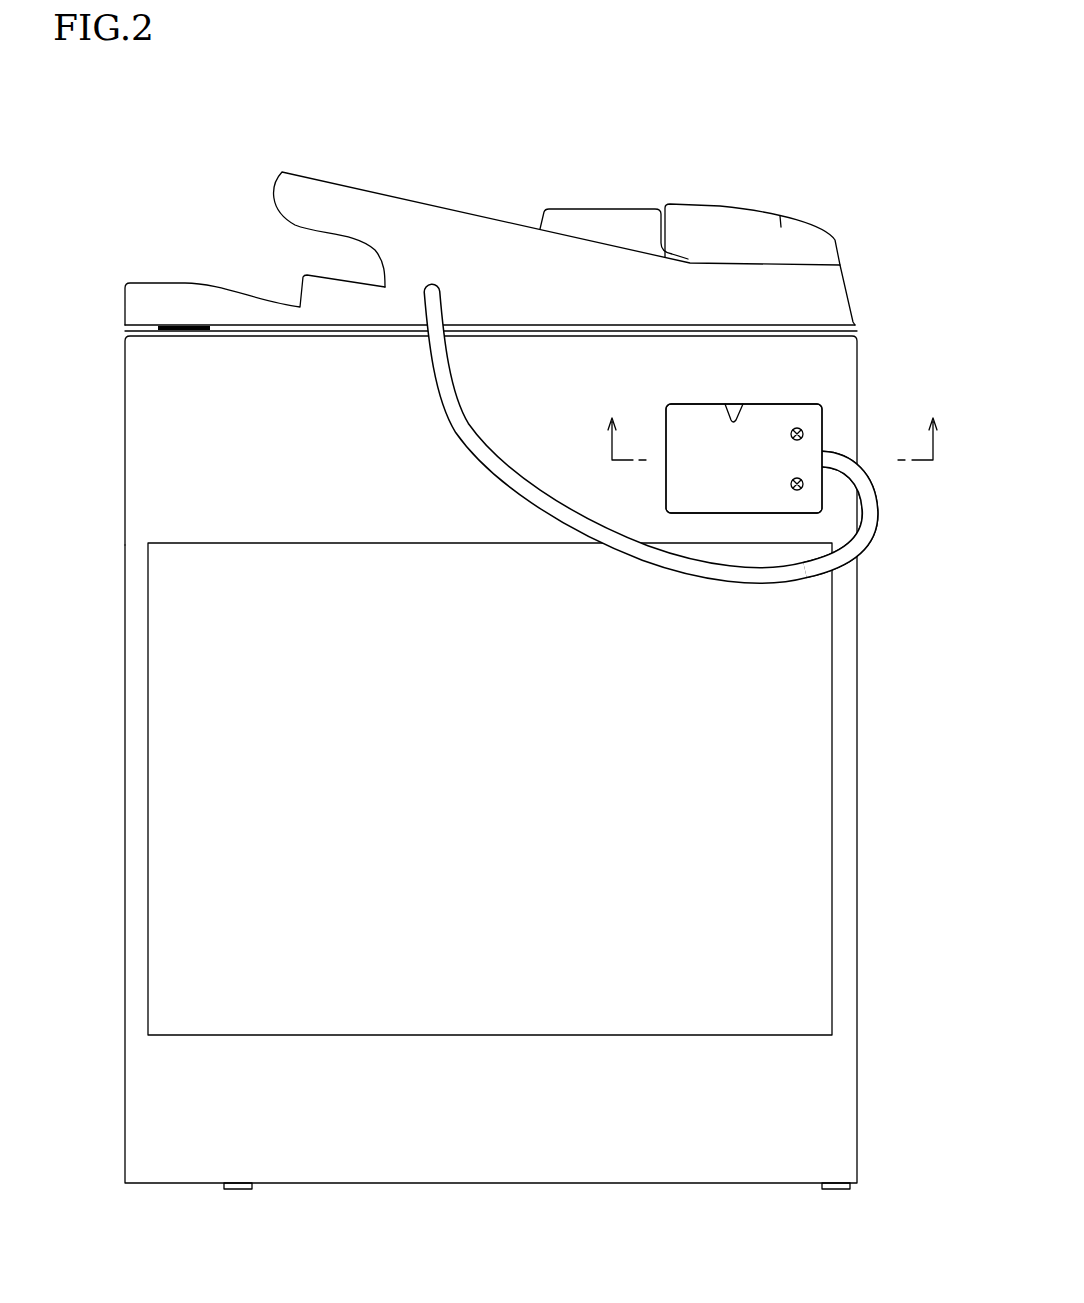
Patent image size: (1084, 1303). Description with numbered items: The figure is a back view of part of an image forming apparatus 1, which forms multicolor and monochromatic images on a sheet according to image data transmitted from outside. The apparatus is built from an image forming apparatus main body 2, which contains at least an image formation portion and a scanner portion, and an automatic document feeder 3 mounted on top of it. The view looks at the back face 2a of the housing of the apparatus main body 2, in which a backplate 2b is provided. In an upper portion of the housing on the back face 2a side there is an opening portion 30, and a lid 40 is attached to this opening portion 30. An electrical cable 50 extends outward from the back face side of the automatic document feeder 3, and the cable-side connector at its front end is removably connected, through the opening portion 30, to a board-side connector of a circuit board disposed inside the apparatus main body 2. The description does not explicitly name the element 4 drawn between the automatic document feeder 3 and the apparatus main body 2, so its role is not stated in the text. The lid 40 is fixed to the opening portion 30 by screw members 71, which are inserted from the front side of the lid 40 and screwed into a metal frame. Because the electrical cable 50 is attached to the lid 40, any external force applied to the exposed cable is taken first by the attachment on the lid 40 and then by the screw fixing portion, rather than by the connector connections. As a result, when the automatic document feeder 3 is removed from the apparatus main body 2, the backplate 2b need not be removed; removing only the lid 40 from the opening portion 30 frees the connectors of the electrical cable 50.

The image forming apparatus 1 is at (133, 258).
The image forming apparatus main body 2 is at (857, 672).
The back face 2a is at (135, 446).
The backplate 2b is at (160, 630).
The automatic document feeder 3 is at (740, 208).
The cable 4 is at (481, 323).
The opening portion 30 is at (745, 407).
The lid 40 is at (768, 427).
The electrical cable 50 is at (870, 537).
The screw member 71 is at (798, 428).